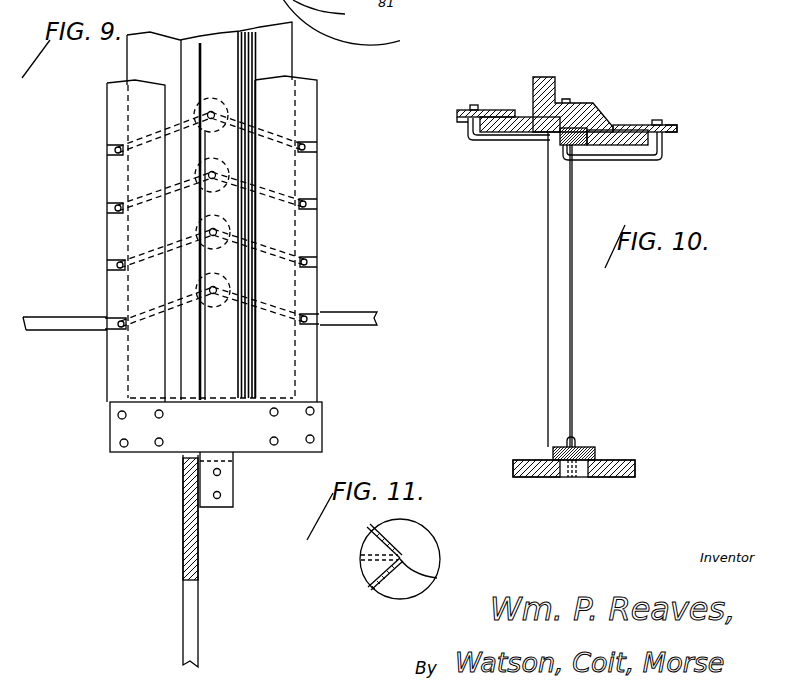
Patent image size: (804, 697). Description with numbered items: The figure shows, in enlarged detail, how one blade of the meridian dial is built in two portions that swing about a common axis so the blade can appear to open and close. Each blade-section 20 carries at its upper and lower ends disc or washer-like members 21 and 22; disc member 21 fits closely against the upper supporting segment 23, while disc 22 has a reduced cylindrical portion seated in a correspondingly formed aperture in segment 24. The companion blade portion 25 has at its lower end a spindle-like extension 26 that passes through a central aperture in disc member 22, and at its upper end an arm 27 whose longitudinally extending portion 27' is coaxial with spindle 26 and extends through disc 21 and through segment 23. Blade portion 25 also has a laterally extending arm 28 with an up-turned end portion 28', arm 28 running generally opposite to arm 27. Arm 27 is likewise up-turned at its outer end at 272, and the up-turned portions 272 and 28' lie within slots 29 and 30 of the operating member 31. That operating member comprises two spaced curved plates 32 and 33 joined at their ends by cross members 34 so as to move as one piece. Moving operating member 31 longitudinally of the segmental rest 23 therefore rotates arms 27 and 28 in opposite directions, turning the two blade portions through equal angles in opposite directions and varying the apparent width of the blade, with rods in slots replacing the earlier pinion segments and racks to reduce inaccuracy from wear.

In FIG. 9, the blade-section 20 is at (211, 104).
In FIG. 10, the blade-section 20 is at (540, 275).
In FIG. 11, the blade-section 20 is at (388, 582).
In FIG. 9, the disc member 21 is at (173, 153).
In FIG. 10, the disc member 21 is at (553, 145).
In FIG. 10, the disc member 22 is at (553, 452).
In FIG. 11, the disc member 22 is at (428, 553).
In FIG. 9, the upper supporting segment 23 is at (283, 62).
In FIG. 10, the upper supporting segment 23 is at (597, 107).
In FIG. 10, the segment 24 is at (527, 478).
In FIG. 10, the blade portion 25 is at (505, 137).
In FIG. 11, the blade portion 25 is at (385, 545).
In FIG. 10, the spindle-like extension 26 is at (575, 446).
In FIG. 11, the spindle-like extension 26 is at (438, 579).
In FIG. 9, the arm 27 is at (263, 218).
In FIG. 10, the arm 27 is at (617, 159).
In FIG. 10, the longitudinally extending portion 27' is at (573, 97).
In FIG. 9, the up-turned portion 272 is at (306, 320).
In FIG. 10, the up-turned portion 272 is at (660, 143).
In FIG. 9, the laterally extending arm 28 is at (135, 220).
In FIG. 10, the up-turned end portion 28' is at (441, 130).
In FIG. 9, the slot 29 is at (323, 165).
In FIG. 9, the slot 30 is at (110, 208).
In FIG. 9, the operating member 31 is at (96, 247).
In FIG. 10, the operating member 31 is at (673, 125).
In FIG. 9, the curved plate 32 is at (286, 239).
In FIG. 10, the curved plate 32 is at (635, 125).
In FIG. 9, the curved plate 33 is at (108, 112).
In FIG. 10, the curved plate 33 is at (497, 107).
In FIG. 9, the cross member 34 is at (118, 428).